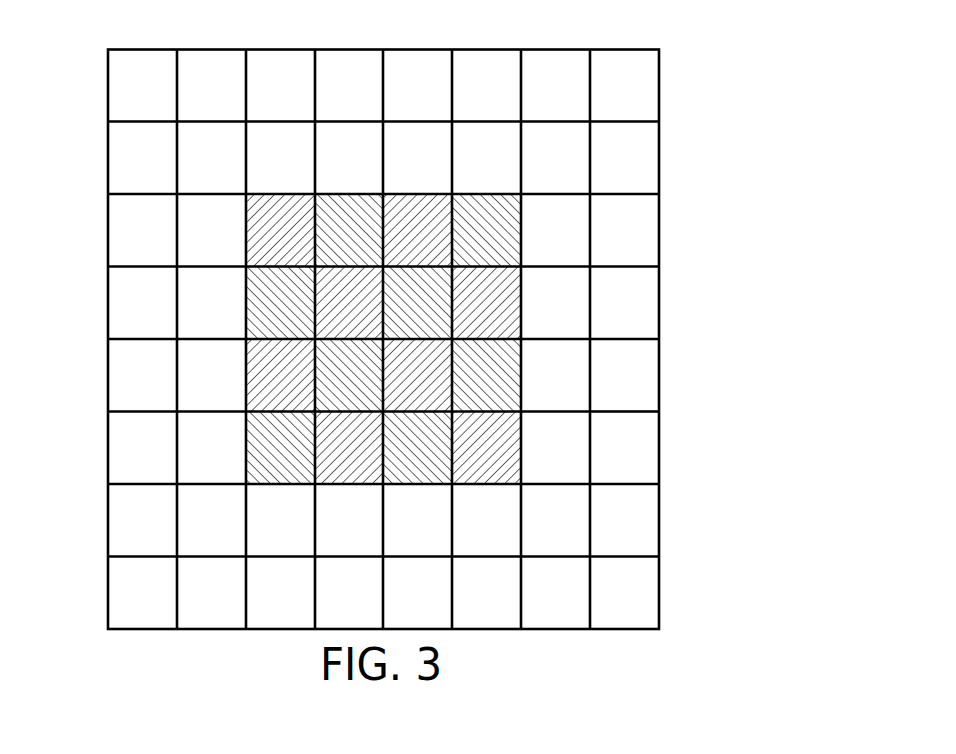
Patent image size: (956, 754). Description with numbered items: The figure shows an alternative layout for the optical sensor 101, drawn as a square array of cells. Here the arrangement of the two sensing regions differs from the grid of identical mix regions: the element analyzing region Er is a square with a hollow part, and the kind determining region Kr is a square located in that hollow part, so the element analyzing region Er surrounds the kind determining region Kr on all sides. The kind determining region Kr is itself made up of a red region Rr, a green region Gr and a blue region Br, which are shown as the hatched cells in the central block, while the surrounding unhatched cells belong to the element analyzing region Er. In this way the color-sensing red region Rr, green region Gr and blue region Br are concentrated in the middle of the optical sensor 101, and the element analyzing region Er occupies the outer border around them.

The optical sensor 101 is at (419, 319).
The red region Rr is at (268, 238).
The green region Gr is at (265, 305).
The blue region Br is at (343, 307).
The kind determining region Kr is at (414, 479).
The element analyzing region Er is at (659, 445).